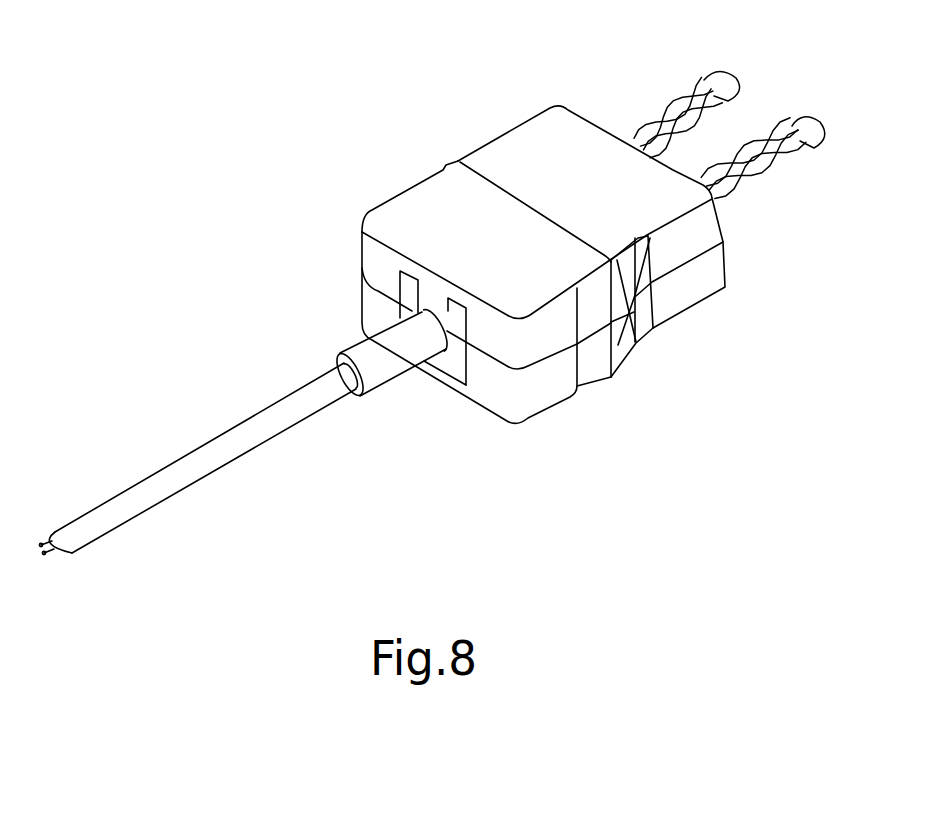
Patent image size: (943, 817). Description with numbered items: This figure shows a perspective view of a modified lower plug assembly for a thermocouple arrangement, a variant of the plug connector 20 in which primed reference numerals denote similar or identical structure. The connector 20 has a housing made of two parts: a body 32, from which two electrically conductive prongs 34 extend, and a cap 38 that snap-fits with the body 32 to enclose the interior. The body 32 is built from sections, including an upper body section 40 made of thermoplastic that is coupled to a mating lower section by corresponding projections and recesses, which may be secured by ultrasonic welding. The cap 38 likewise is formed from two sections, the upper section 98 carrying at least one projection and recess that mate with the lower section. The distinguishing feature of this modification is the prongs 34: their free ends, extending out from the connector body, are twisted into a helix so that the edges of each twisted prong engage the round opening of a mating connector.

The second connector 20 is at (293, 50).
The body 32 is at (508, 100).
The cap 38 is at (390, 157).
The upper section 98 is at (452, 190).
The upper body section 40 is at (567, 130).
The prongs 34 is at (722, 82).